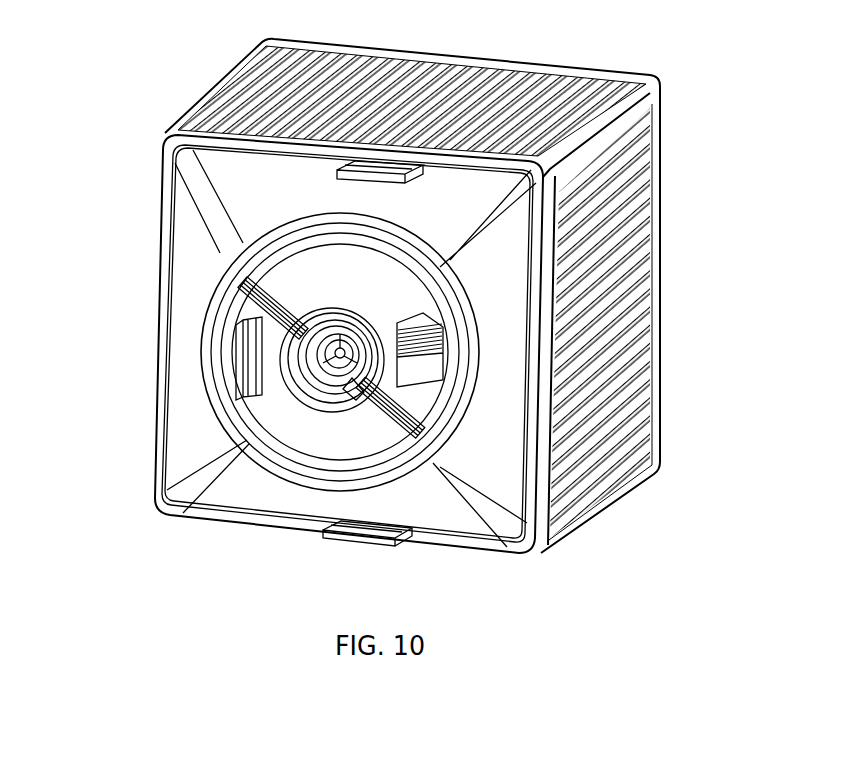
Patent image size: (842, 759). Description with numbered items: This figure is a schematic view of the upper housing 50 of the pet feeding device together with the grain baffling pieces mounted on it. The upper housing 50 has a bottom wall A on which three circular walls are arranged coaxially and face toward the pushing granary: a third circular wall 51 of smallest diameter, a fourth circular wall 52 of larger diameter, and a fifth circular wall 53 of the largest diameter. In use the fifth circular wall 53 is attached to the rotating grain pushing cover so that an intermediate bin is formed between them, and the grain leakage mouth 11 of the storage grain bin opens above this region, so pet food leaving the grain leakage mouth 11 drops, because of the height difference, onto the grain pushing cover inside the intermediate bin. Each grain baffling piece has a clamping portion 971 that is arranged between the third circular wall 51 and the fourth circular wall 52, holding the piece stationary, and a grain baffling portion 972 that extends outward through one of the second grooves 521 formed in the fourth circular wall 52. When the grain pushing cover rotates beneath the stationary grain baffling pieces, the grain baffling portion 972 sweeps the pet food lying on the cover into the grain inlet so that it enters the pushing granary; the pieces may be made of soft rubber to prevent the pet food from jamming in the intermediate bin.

The upper housing 50 is at (220, 253).
The second grooves 521 is at (247, 307).
The fifth circular wall 53 is at (203, 337).
The grain leakage mouth 11 is at (237, 365).
The fourth circular wall 52 is at (283, 378).
The third circular wall 51 is at (247, 440).
The clamping portion 971 is at (342, 400).
The grain baffling portion 972 is at (380, 407).
The bottom wall A is at (397, 300).